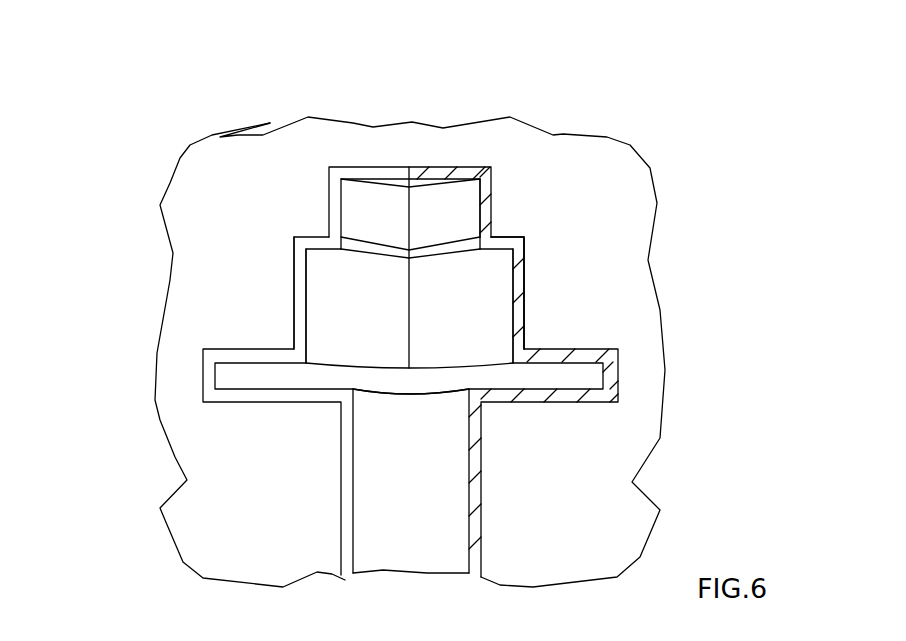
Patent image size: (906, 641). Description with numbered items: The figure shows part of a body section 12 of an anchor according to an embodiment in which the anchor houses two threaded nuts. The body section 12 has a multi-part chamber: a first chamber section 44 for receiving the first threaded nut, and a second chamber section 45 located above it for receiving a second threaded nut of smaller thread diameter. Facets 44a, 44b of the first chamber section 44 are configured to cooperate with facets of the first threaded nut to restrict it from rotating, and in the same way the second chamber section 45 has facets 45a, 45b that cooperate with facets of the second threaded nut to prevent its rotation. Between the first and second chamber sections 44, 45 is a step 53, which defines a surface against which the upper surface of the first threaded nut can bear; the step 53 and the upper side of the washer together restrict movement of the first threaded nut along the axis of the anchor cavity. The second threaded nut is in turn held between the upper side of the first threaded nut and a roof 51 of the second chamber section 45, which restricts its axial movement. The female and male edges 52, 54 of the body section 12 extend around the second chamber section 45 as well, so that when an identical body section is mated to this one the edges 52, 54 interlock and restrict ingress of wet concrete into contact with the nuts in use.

The body section 12 is at (225, 247).
The first chamber section 44 is at (493, 303).
The facet of the first chamber section 44a is at (347, 335).
The facet of the first chamber section 44b is at (495, 322).
The second chamber section 45 is at (453, 212).
The facet of the second chamber section 45a is at (362, 200).
The facet of the second chamber section 45b is at (467, 192).
The roof of the second chamber section 51 is at (384, 187).
The female edge 52 is at (305, 317).
The step 53 is at (353, 243).
The male edge 54 is at (520, 268).